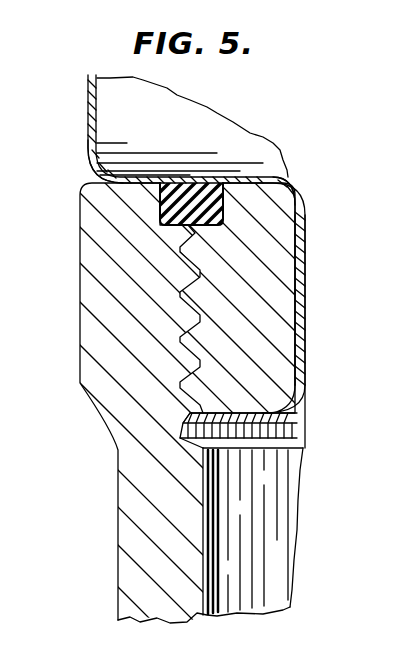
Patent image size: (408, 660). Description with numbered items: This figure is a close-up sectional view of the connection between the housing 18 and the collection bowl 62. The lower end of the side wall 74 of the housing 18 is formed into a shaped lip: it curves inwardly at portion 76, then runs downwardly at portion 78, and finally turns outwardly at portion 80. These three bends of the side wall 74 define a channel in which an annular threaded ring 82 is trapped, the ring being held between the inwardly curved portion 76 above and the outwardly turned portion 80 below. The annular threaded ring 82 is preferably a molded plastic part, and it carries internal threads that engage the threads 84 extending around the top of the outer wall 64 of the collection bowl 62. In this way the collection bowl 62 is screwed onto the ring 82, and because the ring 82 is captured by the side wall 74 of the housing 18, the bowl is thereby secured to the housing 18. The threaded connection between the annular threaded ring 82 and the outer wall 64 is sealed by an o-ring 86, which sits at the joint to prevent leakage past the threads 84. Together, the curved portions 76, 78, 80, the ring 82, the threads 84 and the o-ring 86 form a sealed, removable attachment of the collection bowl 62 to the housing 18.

The housing 18 is at (88, 98).
The side wall 74 is at (88, 143).
The inwardly curved portion 76 is at (205, 176).
The annular threaded ring 82 is at (276, 197).
The o-ring 86 is at (159, 224).
The downward portion 78 is at (306, 287).
The threads 84 is at (197, 344).
The outward portion 80 is at (290, 392).
The outer wall 64 is at (117, 480).
The collection bowl 62 is at (117, 518).